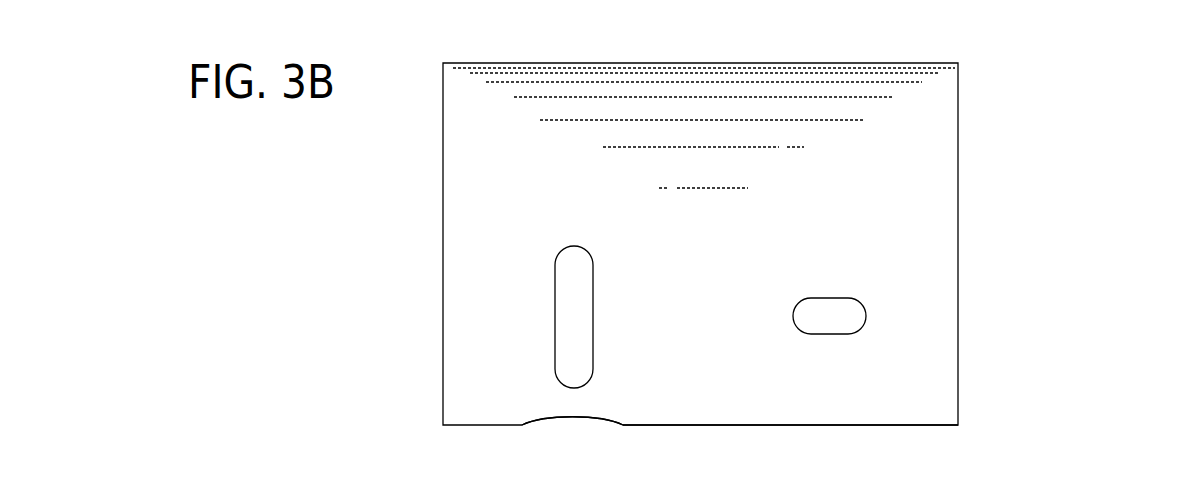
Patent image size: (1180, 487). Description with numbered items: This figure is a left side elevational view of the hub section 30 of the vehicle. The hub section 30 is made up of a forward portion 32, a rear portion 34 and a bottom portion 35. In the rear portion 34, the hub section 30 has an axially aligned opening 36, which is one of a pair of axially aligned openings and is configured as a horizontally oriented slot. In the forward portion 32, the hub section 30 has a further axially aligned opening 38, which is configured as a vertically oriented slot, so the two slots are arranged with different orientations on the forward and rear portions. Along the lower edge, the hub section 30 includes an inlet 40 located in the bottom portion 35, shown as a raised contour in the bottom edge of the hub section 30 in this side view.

The hub section 30 is at (1098, 80).
The forward portion 32 is at (480, 62).
The rear portion 34 is at (921, 62).
The bottom portion 35 is at (698, 427).
The axially aligned opening 36 is at (828, 328).
The axially aligned opening 38 is at (577, 293).
The inlet 40 is at (538, 427).